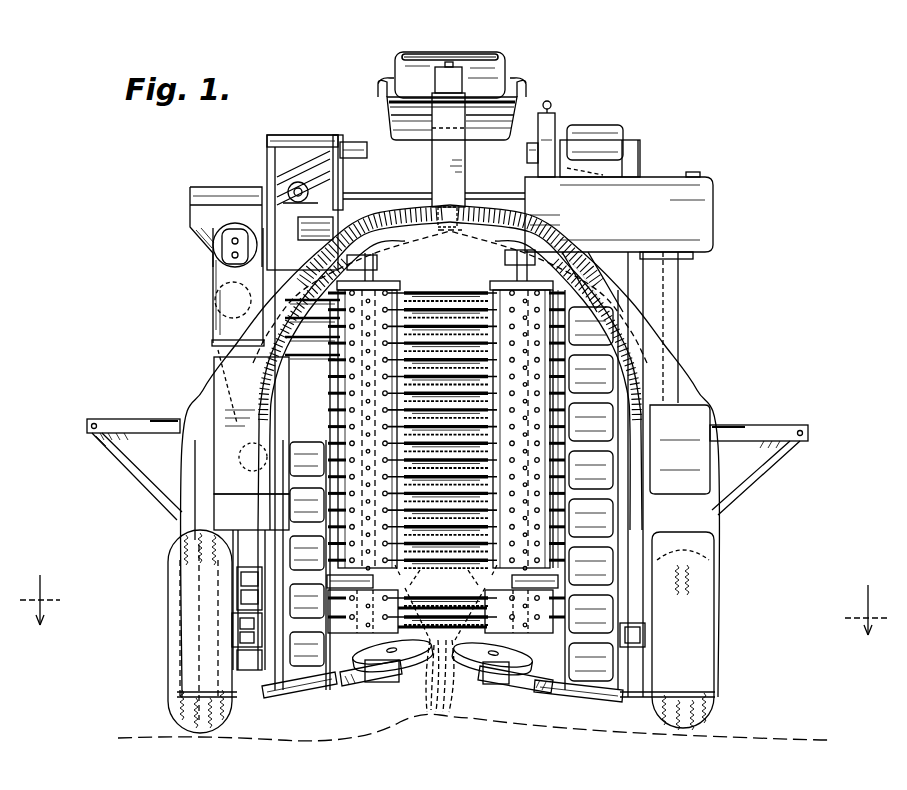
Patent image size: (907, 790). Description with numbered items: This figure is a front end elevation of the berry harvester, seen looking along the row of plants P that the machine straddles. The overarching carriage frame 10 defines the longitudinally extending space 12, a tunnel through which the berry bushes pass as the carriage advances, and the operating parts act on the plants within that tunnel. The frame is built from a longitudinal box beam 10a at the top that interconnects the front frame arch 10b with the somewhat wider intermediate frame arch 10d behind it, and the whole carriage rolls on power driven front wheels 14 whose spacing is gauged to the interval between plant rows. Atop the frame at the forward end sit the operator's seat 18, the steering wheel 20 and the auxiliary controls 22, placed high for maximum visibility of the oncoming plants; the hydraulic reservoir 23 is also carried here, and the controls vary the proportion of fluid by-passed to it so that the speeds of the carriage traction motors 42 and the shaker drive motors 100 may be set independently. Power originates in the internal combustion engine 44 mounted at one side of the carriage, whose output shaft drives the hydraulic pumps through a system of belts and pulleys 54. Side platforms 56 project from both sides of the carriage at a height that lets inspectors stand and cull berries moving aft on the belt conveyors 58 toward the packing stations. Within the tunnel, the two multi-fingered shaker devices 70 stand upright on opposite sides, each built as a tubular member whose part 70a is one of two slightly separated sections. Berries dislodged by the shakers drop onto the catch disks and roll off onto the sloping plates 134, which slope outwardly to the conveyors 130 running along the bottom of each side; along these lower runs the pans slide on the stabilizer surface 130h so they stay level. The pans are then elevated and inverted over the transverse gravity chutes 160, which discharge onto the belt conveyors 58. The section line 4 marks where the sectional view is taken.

The carriage frame 10 is at (697, 345).
The longitudinal box beam 10a is at (462, 227).
The front frame arch 10b is at (637, 385).
The intermediate frame arch 10d is at (692, 387).
The longitudinally extending space 12 is at (466, 277).
The front wheels 14 is at (170, 702).
The operator's seat 18 is at (503, 117).
The steering wheel 20 is at (485, 53).
The auxiliary controls 22 is at (552, 113).
The reservoir 23 is at (712, 213).
The carriage traction motors 42 is at (253, 680).
The internal combustion engine 44 is at (243, 480).
The system of belts and pulleys 54 is at (203, 281).
The side platforms 56 is at (145, 418).
The belt conveyors 58 is at (207, 187).
The multi-fingered shaker devices 70 is at (407, 280).
The shaker tubular member part 70a is at (397, 277).
The shaker drive motors 100 is at (297, 233).
The conveyors 130 is at (305, 133).
The stabilizer surface 130h is at (357, 143).
The sloping plates 134 is at (363, 685).
The transverse gravity chutes 160 is at (312, 155).
The section line 4— 4 is at (455, 605).
The plants P is at (453, 668).